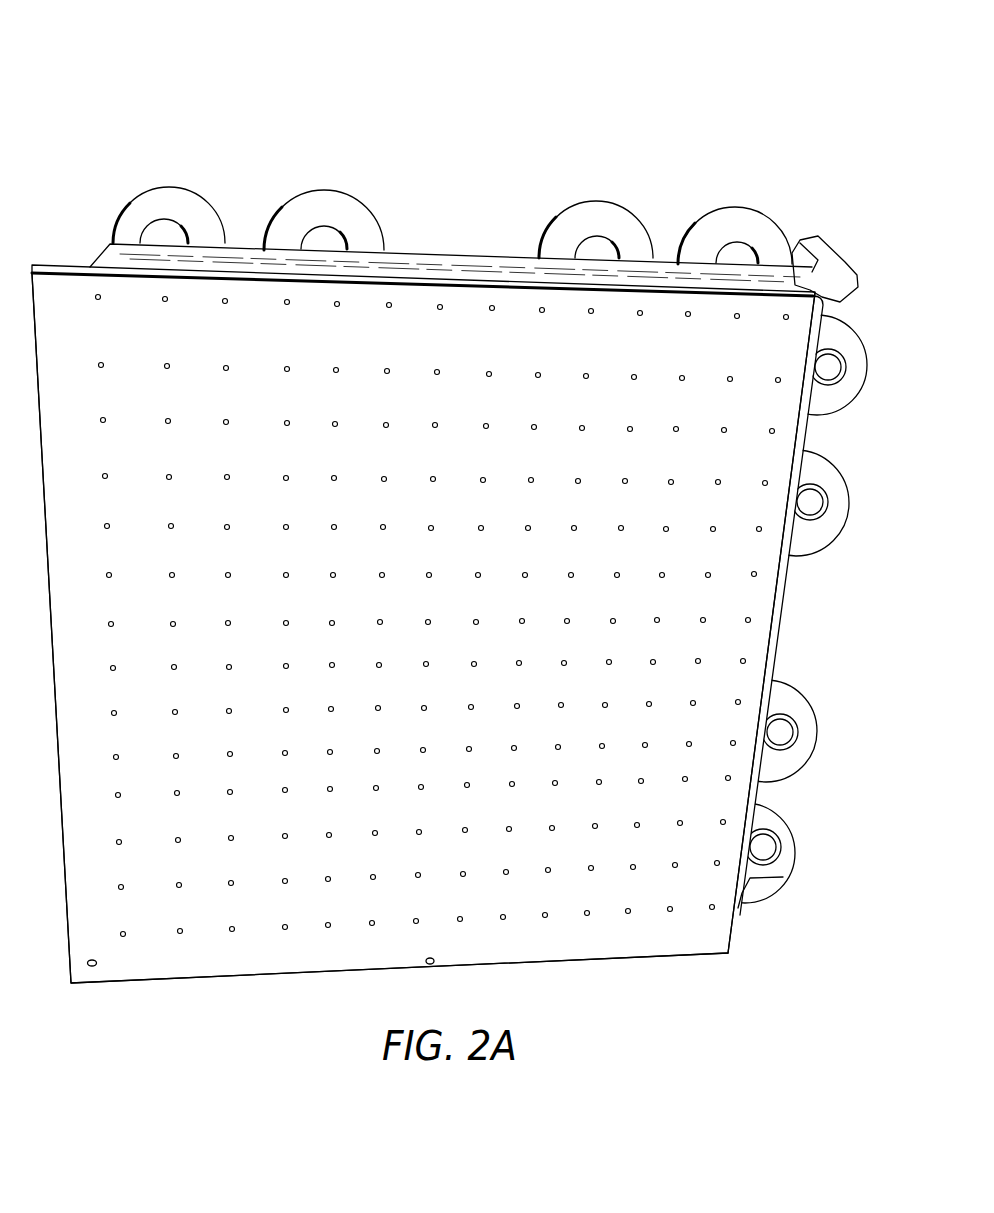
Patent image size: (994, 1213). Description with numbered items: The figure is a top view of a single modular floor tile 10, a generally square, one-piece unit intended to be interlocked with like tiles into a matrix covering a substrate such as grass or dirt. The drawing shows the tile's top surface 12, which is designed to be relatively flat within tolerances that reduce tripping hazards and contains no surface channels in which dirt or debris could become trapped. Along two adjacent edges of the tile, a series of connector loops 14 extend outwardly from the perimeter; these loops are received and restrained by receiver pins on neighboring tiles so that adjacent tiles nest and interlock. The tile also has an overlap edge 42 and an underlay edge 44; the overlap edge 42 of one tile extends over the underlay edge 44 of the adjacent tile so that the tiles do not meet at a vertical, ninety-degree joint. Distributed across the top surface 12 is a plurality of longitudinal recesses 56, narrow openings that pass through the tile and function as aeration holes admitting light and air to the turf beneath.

The modular floor tile 10 is at (600, 128).
The top surface 12 is at (366, 608).
The connector loops 14 is at (269, 219).
The overlap edge 42 is at (54, 640).
The underlay edge 44 is at (460, 268).
The longitudinal recesses 56 is at (526, 523).